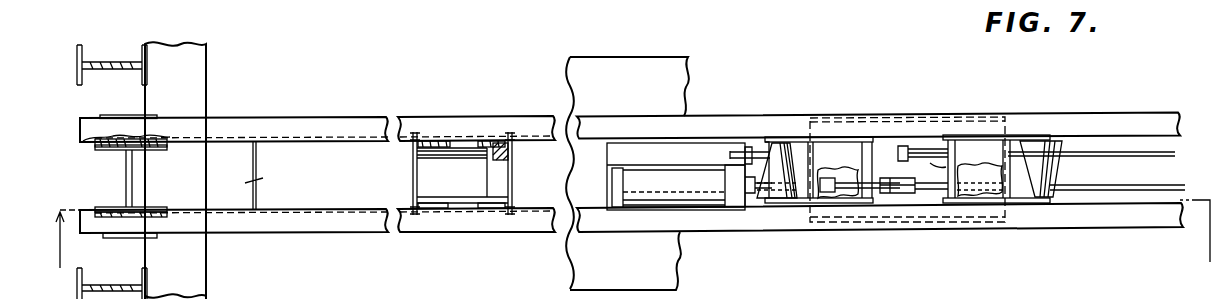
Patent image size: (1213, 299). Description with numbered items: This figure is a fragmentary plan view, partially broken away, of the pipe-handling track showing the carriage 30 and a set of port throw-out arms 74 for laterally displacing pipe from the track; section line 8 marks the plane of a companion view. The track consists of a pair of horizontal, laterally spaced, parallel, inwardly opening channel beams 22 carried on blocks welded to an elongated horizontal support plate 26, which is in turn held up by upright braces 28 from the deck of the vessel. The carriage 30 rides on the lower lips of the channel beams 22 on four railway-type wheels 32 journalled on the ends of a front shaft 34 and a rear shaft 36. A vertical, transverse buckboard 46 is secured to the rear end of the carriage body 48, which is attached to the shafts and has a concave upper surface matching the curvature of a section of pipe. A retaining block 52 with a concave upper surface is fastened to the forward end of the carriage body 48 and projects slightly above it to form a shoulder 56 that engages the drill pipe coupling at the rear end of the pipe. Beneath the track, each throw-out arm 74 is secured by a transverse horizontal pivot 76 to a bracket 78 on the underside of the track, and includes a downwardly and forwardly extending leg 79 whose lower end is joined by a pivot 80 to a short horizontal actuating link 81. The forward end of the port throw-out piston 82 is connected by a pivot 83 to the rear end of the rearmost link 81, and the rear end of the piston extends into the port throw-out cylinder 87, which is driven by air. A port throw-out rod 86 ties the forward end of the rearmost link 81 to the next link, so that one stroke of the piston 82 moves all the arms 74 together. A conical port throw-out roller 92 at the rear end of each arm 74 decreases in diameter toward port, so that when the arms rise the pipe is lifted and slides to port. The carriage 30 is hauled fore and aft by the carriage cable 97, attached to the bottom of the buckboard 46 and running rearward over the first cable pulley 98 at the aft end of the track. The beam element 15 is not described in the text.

The section line 8- 8 is at (632, 247).
The upper beam 15 is at (704, 125).
The channel beams 22 is at (587, 208).
The support plate 26 is at (643, 75).
The upright braces 28 is at (197, 273).
The carriage 30 is at (455, 165).
The railway-type wheels 32 is at (488, 137).
The front shaft 34 is at (512, 152).
The rear shaft 36 is at (425, 198).
The buckboard 46 is at (413, 152).
The carriage body 48 is at (417, 163).
The retaining block 52 is at (502, 185).
The shoulder 56 is at (485, 165).
The port throw-out arms 74 is at (843, 138).
The pivots 76 is at (865, 157).
The bracket 78 is at (935, 200).
The leg 79 is at (855, 205).
The pivot 80 is at (907, 205).
The actuating link 81 is at (932, 170).
The port throw-out piston 82 is at (755, 190).
The pivot 83 is at (858, 173).
The port throw-out rod 86 is at (1092, 188).
The port throw-out cylinder 87 is at (712, 188).
The conical port throw-out roller 92 is at (763, 140).
The carriage cable 97 is at (300, 137).
The first cable pulley 98 is at (106, 207).